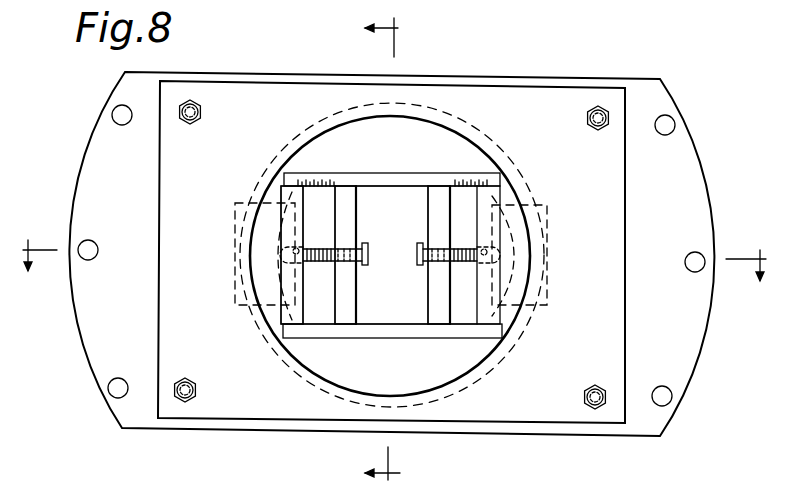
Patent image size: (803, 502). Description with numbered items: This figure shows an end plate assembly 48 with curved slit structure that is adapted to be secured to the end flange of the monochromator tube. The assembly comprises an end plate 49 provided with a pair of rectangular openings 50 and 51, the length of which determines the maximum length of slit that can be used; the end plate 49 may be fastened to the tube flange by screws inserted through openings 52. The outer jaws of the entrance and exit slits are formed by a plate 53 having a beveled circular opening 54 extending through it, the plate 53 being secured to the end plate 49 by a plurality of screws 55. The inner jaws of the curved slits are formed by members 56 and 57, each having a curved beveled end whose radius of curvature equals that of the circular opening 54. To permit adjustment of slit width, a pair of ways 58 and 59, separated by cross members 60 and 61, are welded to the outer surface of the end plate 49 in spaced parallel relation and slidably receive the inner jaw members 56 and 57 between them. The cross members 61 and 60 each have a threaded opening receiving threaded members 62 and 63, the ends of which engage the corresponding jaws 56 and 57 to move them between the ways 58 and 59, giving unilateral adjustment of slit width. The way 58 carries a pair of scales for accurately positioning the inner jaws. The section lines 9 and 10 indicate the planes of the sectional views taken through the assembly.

The section line 9- 9 is at (394, 271).
The section line 10- 10 is at (367, 251).
The end plate assembly 48 is at (718, 85).
The end plate 49 is at (405, 75).
The opening 50 is at (541, 306).
The opening 51 is at (247, 224).
The openings 52 is at (122, 126).
The plate 53 is at (611, 249).
The beveled circular opening 54 is at (458, 134).
The screws 55 is at (190, 123).
The inner jaw member 56 is at (492, 198).
The inner jaw member 57 is at (299, 208).
The way 58 is at (414, 178).
The way 59 is at (416, 338).
The cross member 60 is at (440, 280).
The cross member 61 is at (347, 307).
The threaded member 62 is at (418, 243).
The threaded member 63 is at (364, 243).